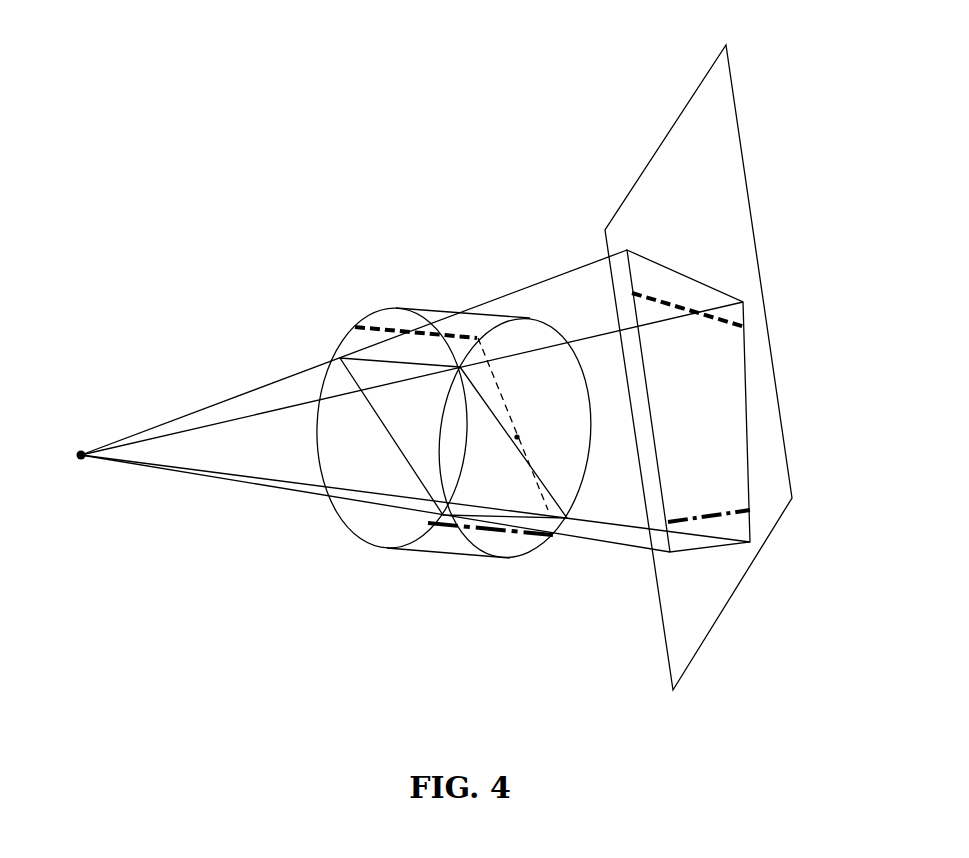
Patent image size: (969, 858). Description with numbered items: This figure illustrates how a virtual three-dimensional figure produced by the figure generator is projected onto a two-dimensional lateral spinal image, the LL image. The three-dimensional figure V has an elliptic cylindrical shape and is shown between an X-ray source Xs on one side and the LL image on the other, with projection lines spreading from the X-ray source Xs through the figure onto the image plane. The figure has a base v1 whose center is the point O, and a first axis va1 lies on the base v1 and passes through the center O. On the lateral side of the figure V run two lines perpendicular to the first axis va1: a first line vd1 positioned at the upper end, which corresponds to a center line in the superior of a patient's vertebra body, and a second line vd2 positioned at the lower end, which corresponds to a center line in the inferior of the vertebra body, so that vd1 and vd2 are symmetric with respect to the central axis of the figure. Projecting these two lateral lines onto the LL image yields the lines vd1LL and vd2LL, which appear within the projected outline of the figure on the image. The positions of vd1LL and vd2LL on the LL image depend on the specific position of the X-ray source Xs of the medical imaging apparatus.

The X-ray source Xs is at (79, 440).
The 3D figure V is at (428, 293).
The 3D figure base v1 is at (537, 366).
The center of 3D figure base O is at (528, 440).
The first axis va1 is at (500, 387).
The first line vd1 is at (390, 328).
The second line vd2 is at (483, 532).
The LL spinal image LL image is at (726, 627).
The projected first line on LL image vd1LL is at (688, 310).
The projected second line on LL image vd2LL is at (737, 507).